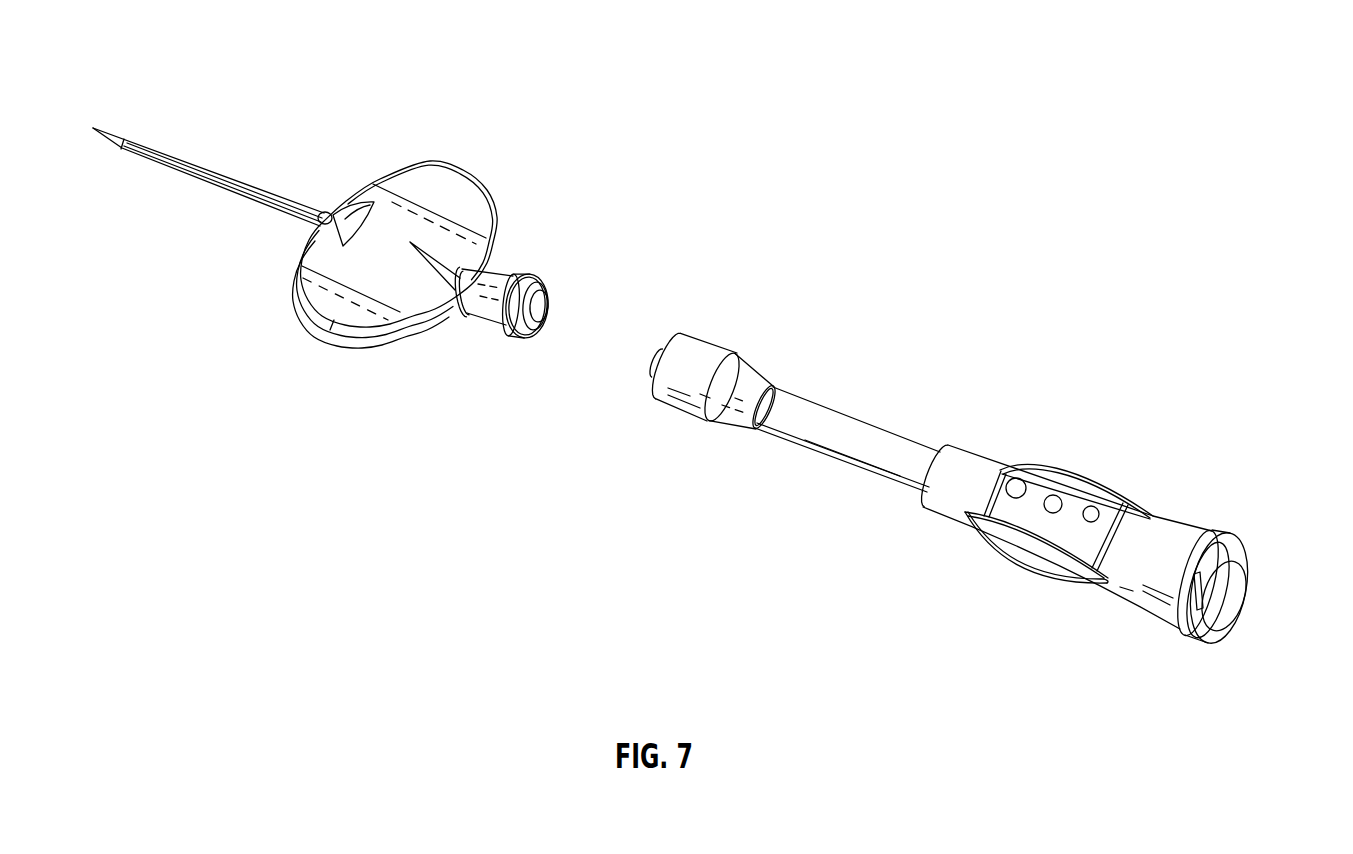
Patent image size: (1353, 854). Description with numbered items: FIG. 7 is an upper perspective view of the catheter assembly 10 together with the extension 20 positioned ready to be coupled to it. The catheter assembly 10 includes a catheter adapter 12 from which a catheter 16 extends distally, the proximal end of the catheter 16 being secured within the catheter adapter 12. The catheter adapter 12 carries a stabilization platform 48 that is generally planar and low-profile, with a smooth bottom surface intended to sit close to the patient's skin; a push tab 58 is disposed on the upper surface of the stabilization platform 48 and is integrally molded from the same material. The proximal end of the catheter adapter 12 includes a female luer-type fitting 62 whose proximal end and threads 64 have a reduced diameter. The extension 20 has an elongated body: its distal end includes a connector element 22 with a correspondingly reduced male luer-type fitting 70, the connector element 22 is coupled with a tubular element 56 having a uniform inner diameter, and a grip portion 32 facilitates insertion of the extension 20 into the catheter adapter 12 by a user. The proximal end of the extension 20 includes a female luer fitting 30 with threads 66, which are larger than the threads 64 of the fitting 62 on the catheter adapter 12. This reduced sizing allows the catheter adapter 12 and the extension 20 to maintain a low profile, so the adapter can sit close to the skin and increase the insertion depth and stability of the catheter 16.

The catheter assembly 10 is at (724, 207).
The catheter adapter 12 is at (404, 146).
The catheter 16 is at (208, 170).
The stabilization platform 48 is at (443, 175).
The push tab 58 is at (340, 209).
The female luer-type fitting 62 is at (542, 260).
The threads 64 is at (498, 322).
The extension 20 is at (853, 375).
The male luer-type fitting 70 is at (669, 385).
The connector element 22 is at (736, 438).
The tubular element 56 is at (864, 447).
The female luer fitting 30 is at (1260, 555).
The grip portion 32 is at (1096, 462).
The threads 66 is at (1216, 532).